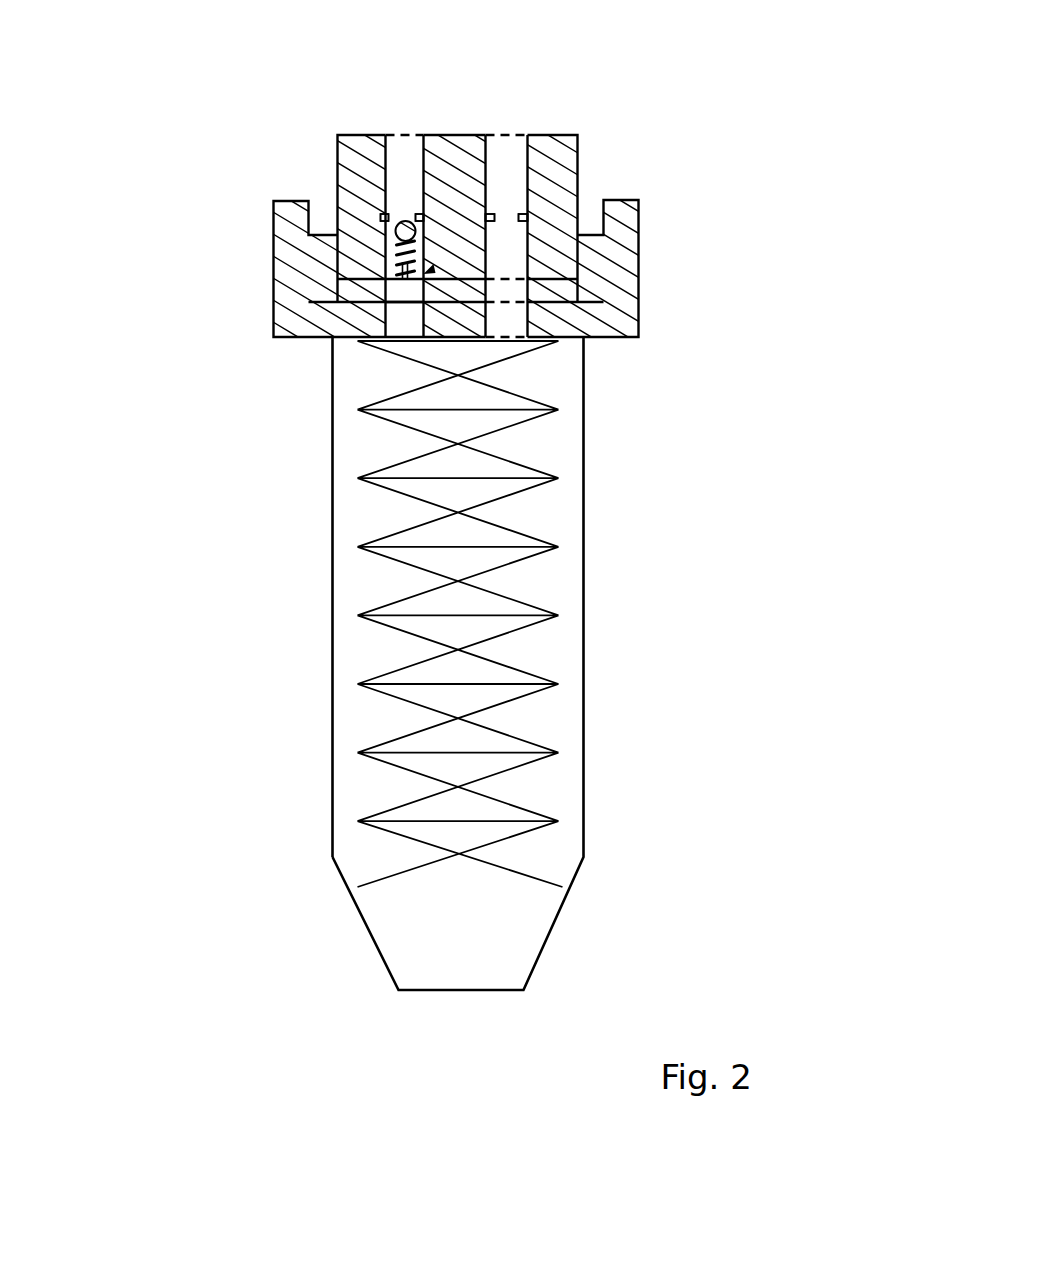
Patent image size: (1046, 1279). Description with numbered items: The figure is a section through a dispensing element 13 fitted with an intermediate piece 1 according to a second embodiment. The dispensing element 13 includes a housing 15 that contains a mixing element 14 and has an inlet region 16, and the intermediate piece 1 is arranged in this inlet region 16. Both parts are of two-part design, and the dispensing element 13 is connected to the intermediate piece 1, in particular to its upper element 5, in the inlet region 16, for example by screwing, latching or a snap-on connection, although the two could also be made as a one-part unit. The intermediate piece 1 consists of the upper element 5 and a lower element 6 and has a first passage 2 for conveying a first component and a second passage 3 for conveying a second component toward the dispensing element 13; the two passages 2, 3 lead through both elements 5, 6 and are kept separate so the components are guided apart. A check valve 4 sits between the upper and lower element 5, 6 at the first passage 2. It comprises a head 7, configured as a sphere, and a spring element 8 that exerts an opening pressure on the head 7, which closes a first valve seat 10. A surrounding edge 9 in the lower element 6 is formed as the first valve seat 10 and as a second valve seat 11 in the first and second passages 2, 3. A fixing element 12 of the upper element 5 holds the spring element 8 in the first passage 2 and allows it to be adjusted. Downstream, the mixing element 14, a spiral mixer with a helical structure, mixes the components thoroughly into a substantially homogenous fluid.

The intermediate piece 1 is at (606, 114).
The first passage 2 is at (398, 148).
The second passage 3 is at (501, 148).
The check valve 4 is at (483, 283).
The upper element 5 is at (622, 287).
The lower element 6 is at (353, 188).
The head 7 is at (394, 229).
The spring element 8 is at (403, 257).
The surrounding edge 9 is at (454, 217).
The first valve seat 10 is at (383, 218).
The second valve seat 11 is at (527, 215).
The fixing element 12 is at (380, 280).
The dispensing element 13 is at (604, 582).
The mixing element 14 is at (417, 597).
The housing 15 is at (332, 687).
The inlet region 16 is at (408, 302).